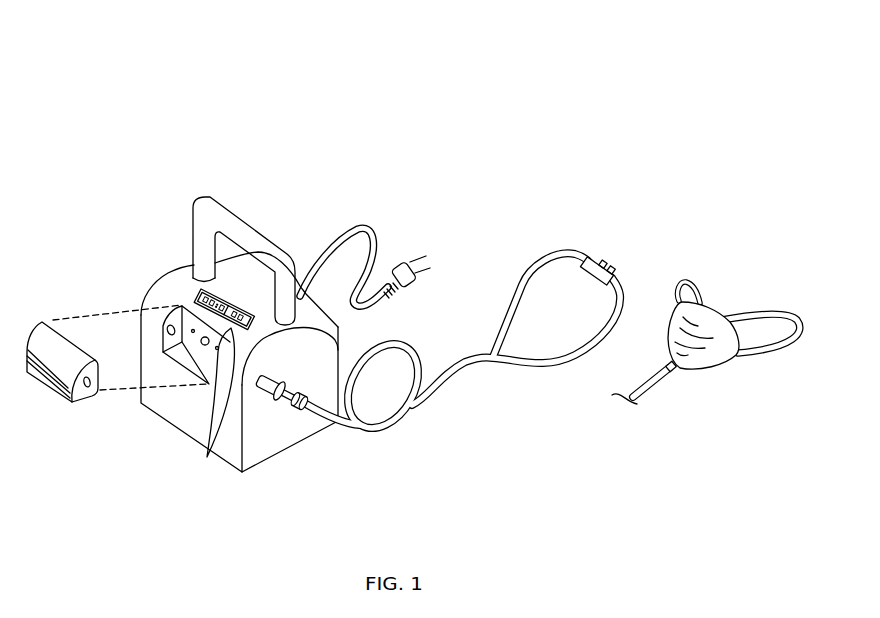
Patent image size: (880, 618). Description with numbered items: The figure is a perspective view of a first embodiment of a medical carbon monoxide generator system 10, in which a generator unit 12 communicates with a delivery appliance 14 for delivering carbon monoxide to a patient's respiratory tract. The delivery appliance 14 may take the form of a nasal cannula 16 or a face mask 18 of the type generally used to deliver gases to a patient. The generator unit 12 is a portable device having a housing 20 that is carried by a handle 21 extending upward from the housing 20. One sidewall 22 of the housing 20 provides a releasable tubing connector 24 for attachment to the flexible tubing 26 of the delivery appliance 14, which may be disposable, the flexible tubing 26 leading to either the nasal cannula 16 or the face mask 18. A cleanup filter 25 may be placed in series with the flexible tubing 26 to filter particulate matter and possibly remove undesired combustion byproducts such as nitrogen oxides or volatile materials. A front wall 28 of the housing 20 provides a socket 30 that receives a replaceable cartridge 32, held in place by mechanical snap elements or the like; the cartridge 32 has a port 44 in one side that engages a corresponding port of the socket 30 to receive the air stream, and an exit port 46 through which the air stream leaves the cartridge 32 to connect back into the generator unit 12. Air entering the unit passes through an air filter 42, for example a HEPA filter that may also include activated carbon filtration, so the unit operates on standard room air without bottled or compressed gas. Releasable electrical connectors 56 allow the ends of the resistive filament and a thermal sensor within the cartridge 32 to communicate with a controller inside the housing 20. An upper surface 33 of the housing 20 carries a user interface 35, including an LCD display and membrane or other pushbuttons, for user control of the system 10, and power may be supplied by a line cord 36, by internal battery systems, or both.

The medical carbon monoxide generator system 10 is at (159, 52).
The generator unit 12 is at (133, 253).
The delivery appliance 14 is at (587, 220).
The nasal cannula 16 is at (616, 270).
The face mask 18 is at (714, 314).
The housing 20 is at (168, 461).
The handle 21 is at (231, 224).
The sidewall 22 is at (255, 446).
The releasable tubing connector 24 is at (279, 383).
The cleanup filter 25 is at (299, 413).
The flexible tubing 26 is at (397, 418).
The front wall 28 is at (172, 408).
The socket 30 is at (140, 298).
The replaceable cartridge 32 is at (50, 362).
The upper surface 33 is at (176, 258).
The user interface 35 is at (222, 293).
The line cord 36 is at (375, 230).
The air filter 42 is at (168, 332).
The port 44 is at (38, 296).
The exit port 46 is at (88, 388).
The releasable electrical connectors 56 is at (210, 452).